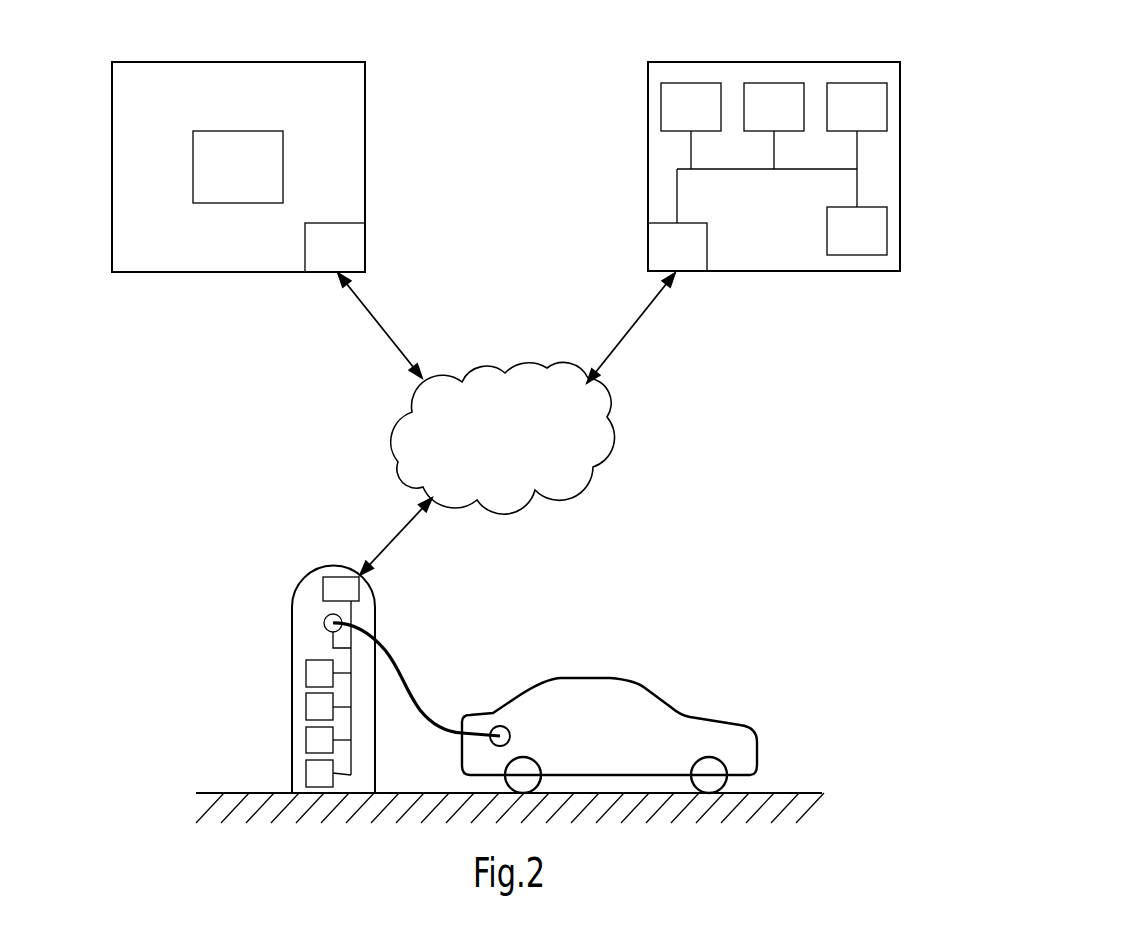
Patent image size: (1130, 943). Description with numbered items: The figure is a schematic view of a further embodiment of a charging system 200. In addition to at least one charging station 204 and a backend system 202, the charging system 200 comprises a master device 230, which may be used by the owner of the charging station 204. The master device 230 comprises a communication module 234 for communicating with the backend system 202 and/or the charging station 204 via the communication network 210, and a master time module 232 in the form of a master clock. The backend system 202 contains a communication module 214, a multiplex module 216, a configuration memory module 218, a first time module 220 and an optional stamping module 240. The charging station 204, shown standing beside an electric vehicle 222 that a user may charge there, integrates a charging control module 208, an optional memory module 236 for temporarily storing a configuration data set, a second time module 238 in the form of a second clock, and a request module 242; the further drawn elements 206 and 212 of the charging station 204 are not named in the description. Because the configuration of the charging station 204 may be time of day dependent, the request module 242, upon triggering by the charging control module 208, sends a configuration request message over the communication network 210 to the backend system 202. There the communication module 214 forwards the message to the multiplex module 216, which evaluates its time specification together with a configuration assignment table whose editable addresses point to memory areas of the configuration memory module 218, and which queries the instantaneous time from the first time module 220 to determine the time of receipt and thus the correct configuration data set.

The charging system 200 is at (1032, 125).
The backend system 202 is at (647, 163).
The charging station 204 is at (292, 645).
The charging port / connector 206 is at (324, 623).
The charging control module 208 is at (306, 740).
The communication network 210 is at (525, 450).
The communication module 212 is at (323, 583).
The communication module 214 is at (697, 260).
The multiplex module 216 is at (711, 120).
The configuration memory module 218 is at (794, 120).
The first time module 220 is at (877, 120).
The electric vehicle 222 is at (592, 678).
The master device 230 is at (111, 163).
The master time module 232 is at (258, 179).
The communication module 234 is at (353, 261).
The memory module 236 is at (306, 707).
The second time module 238 is at (306, 773).
The stamping module 240 is at (877, 244).
The request module 242 is at (306, 673).